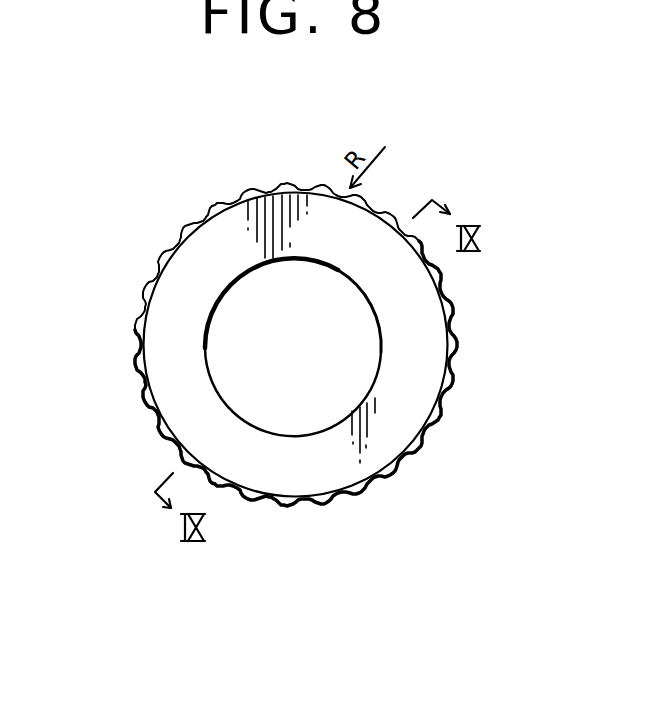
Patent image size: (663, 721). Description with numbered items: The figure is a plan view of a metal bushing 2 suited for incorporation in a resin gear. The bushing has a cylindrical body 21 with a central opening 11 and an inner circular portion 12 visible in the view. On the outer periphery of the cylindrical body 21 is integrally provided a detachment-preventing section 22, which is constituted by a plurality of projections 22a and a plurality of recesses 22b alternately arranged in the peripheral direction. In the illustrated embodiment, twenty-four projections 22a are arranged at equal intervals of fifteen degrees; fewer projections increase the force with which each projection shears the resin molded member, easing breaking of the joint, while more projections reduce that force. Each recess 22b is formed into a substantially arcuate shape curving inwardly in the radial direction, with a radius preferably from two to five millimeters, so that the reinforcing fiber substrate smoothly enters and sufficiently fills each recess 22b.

The metal bushing 2 is at (167, 355).
The central hole 11 is at (317, 482).
The inner circular portion 12 is at (374, 484).
The cylindrical body 21 is at (187, 412).
The detachment-preventing section 22 is at (143, 402).
The projections 22a is at (150, 257).
The recesses 22b is at (176, 243).